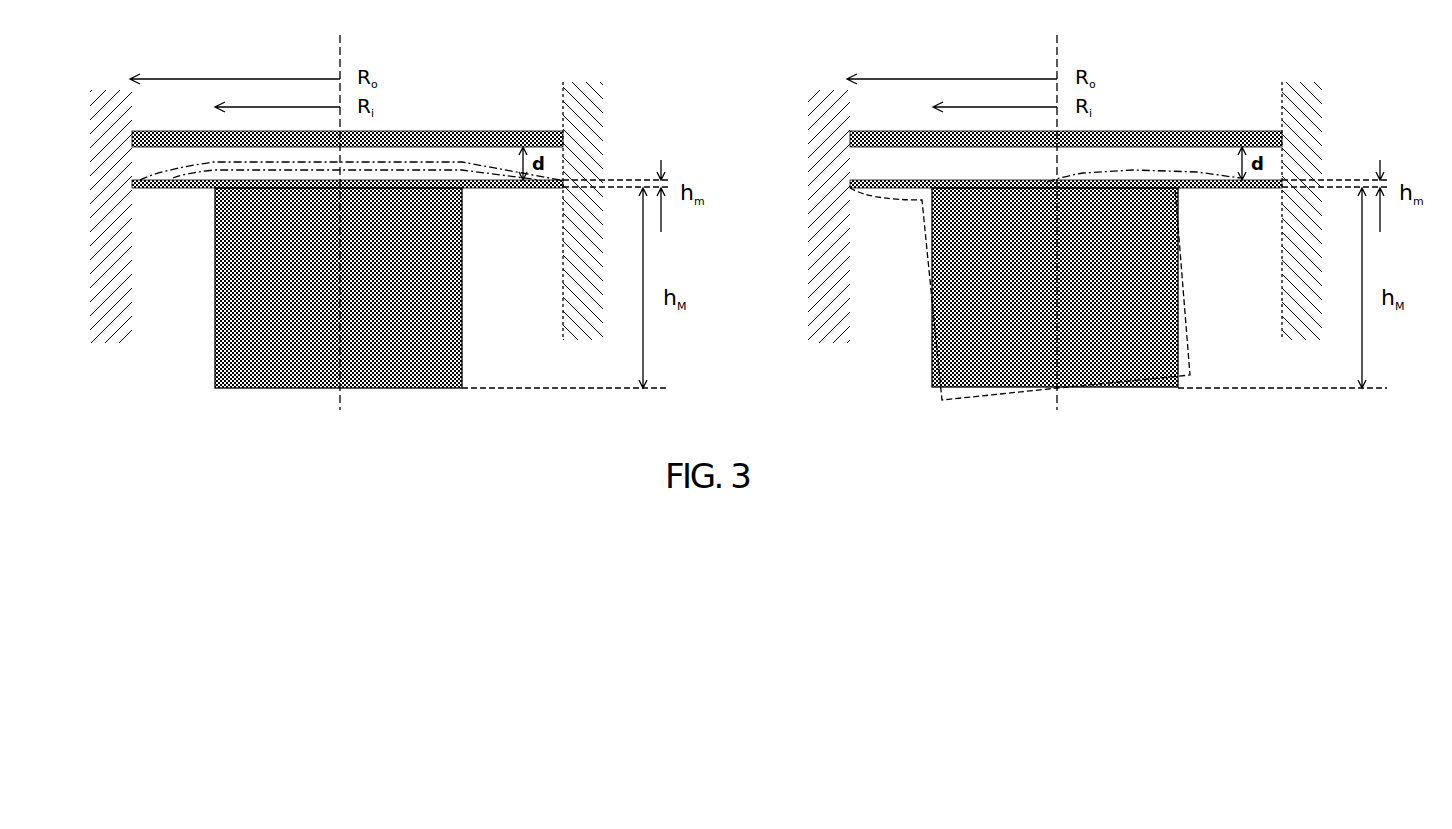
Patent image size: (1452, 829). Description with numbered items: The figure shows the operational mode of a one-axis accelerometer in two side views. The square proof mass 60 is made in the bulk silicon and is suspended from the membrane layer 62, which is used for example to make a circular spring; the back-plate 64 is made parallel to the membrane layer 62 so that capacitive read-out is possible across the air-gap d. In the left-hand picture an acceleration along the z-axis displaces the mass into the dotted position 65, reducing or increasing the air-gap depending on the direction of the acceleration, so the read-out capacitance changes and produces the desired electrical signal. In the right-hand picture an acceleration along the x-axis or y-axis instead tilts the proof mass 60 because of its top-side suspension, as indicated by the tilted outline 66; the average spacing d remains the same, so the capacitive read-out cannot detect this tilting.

The proof mass 60 is at (450, 340).
The membrane layer 62 is at (470, 188).
The back-plate 64 is at (480, 132).
The dotted position 65 is at (410, 167).
The deformed membrane profile 66 is at (1133, 170).